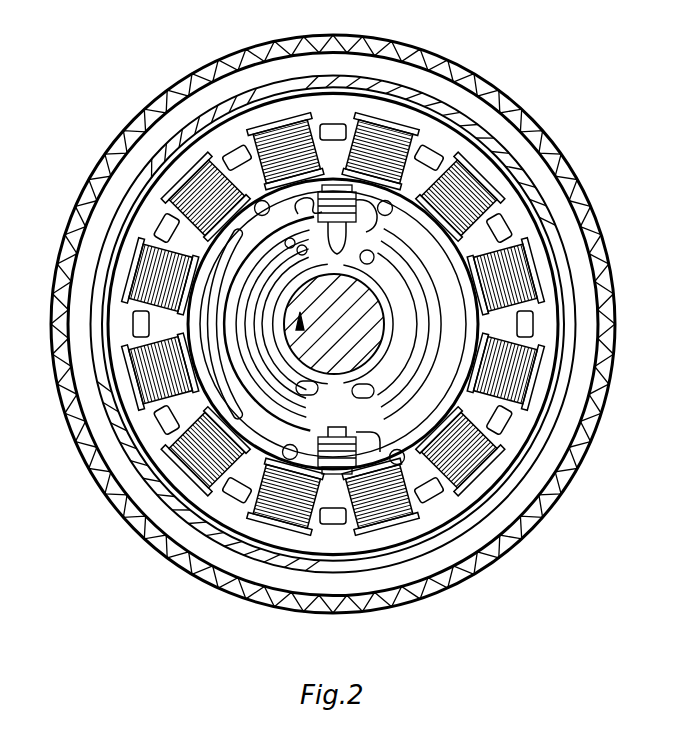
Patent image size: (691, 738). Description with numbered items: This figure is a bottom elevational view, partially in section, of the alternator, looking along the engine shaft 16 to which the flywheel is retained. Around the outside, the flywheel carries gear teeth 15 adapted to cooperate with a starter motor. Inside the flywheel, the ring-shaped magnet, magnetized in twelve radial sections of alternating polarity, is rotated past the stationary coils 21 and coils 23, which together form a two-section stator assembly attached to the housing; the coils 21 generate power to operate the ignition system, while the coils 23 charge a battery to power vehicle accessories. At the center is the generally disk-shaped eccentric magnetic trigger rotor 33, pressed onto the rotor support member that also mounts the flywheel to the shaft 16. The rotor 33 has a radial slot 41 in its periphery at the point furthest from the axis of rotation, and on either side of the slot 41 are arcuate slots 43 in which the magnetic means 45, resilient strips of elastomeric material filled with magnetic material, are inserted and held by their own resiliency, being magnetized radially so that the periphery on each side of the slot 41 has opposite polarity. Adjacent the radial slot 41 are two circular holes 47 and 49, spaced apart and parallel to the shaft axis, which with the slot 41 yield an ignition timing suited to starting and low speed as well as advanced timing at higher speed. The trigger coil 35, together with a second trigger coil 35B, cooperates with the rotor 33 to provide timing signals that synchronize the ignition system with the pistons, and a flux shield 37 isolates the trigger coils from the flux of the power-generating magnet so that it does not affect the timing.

The gear teeth 15 is at (352, 44).
The coils 21 is at (234, 160).
The coils 23 is at (173, 417).
The flux shield 37 is at (385, 197).
The hole 47 is at (301, 198).
The hole 49 is at (281, 228).
The trigger coil 35 is at (393, 213).
The bracket 35B is at (382, 438).
The radial slot 41 is at (378, 232).
The arcuate slots 43 is at (378, 258).
The magnetic trigger rotor 33 is at (415, 318).
The shaft 16 is at (378, 338).
The magnetic means 45 is at (380, 392).